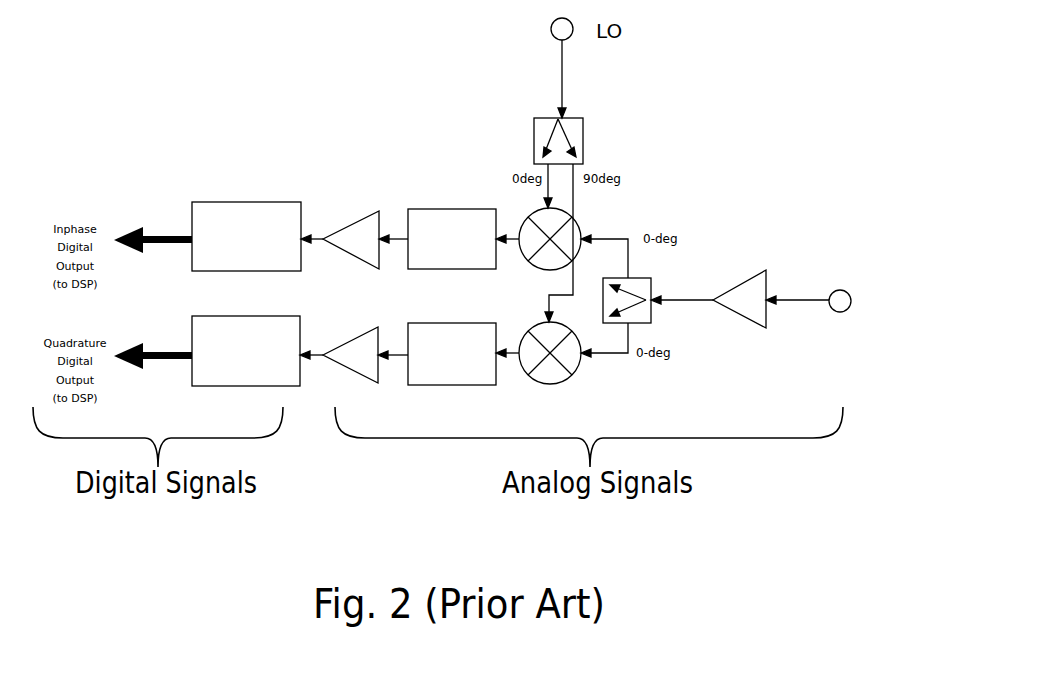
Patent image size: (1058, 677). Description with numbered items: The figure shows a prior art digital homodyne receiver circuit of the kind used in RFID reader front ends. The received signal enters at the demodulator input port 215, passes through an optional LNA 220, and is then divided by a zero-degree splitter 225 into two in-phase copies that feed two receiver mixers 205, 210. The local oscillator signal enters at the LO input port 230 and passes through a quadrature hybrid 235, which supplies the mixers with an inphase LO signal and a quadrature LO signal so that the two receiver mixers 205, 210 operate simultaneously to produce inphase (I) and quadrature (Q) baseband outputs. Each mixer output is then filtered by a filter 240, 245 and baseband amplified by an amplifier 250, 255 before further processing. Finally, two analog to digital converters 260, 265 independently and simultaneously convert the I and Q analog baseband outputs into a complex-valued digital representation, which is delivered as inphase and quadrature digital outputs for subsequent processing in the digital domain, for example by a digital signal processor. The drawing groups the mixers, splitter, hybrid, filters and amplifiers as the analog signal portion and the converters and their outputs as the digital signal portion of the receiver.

The receiver mixer 205 is at (555, 385).
The receiver mixer 210 is at (576, 231).
The demodulator input port 215 is at (838, 313).
The LNA 220 is at (738, 278).
The 0-degree splitter 225 is at (650, 323).
The LO input port 230 is at (553, 37).
The quadrature hybrid 235 is at (534, 146).
The filter 240 is at (432, 209).
The filter 245 is at (433, 385).
The baseband amplifier 250 is at (348, 231).
The baseband amplifier 255 is at (345, 345).
The analog to digital converter 260 is at (238, 202).
The analog to digital converter 265 is at (232, 386).